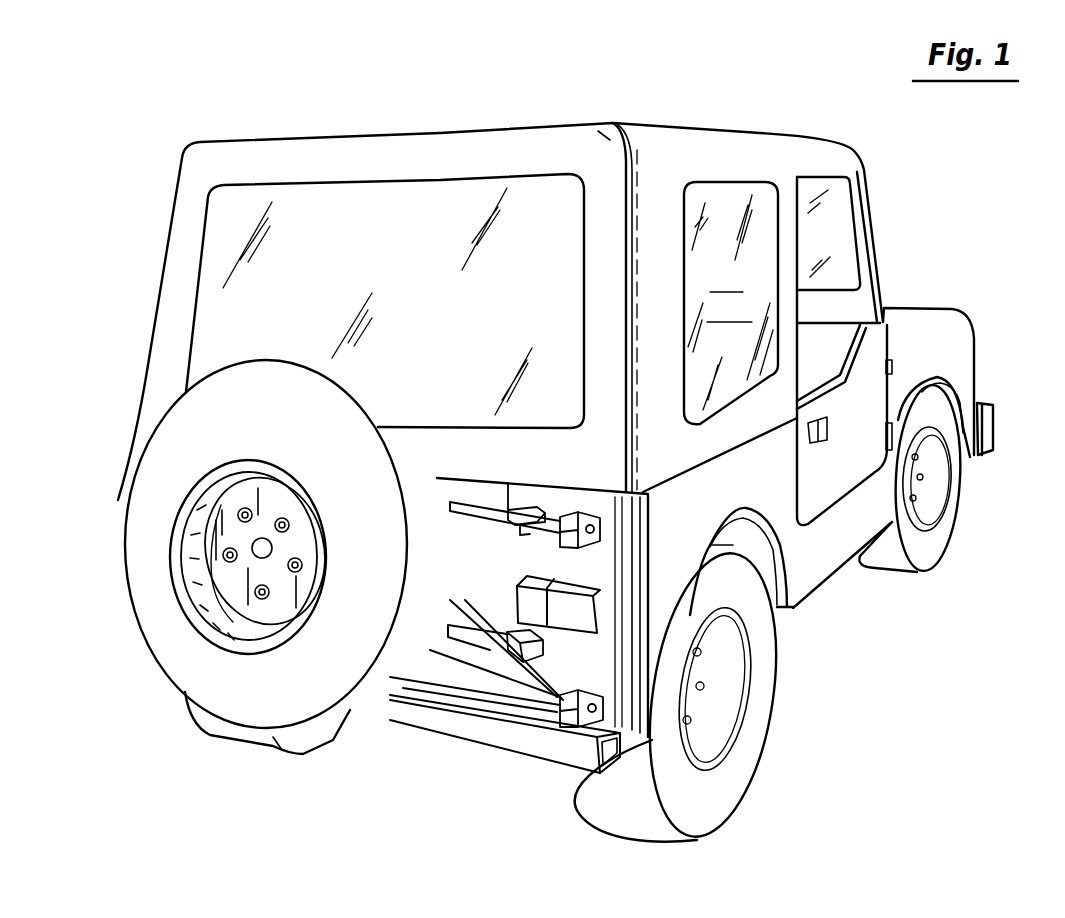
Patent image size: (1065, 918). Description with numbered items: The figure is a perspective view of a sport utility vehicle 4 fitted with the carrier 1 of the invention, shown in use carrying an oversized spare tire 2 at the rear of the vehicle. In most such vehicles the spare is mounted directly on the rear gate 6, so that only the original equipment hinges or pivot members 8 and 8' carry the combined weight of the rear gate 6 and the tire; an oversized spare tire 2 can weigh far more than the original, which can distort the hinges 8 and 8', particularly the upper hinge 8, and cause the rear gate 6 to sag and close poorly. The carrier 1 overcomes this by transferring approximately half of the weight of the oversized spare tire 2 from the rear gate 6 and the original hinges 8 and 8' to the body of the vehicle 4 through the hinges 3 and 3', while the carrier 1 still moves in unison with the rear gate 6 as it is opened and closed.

The carrier 1 is at (582, 478).
The spare tire 2 is at (247, 443).
The hinge 3 is at (589, 503).
The hinge 3' is at (581, 689).
The sport utility vehicle 4 is at (920, 250).
The rear gate 6 is at (490, 562).
The original equipment hinge 8 is at (523, 487).
The original equipment hinge 8' is at (504, 621).